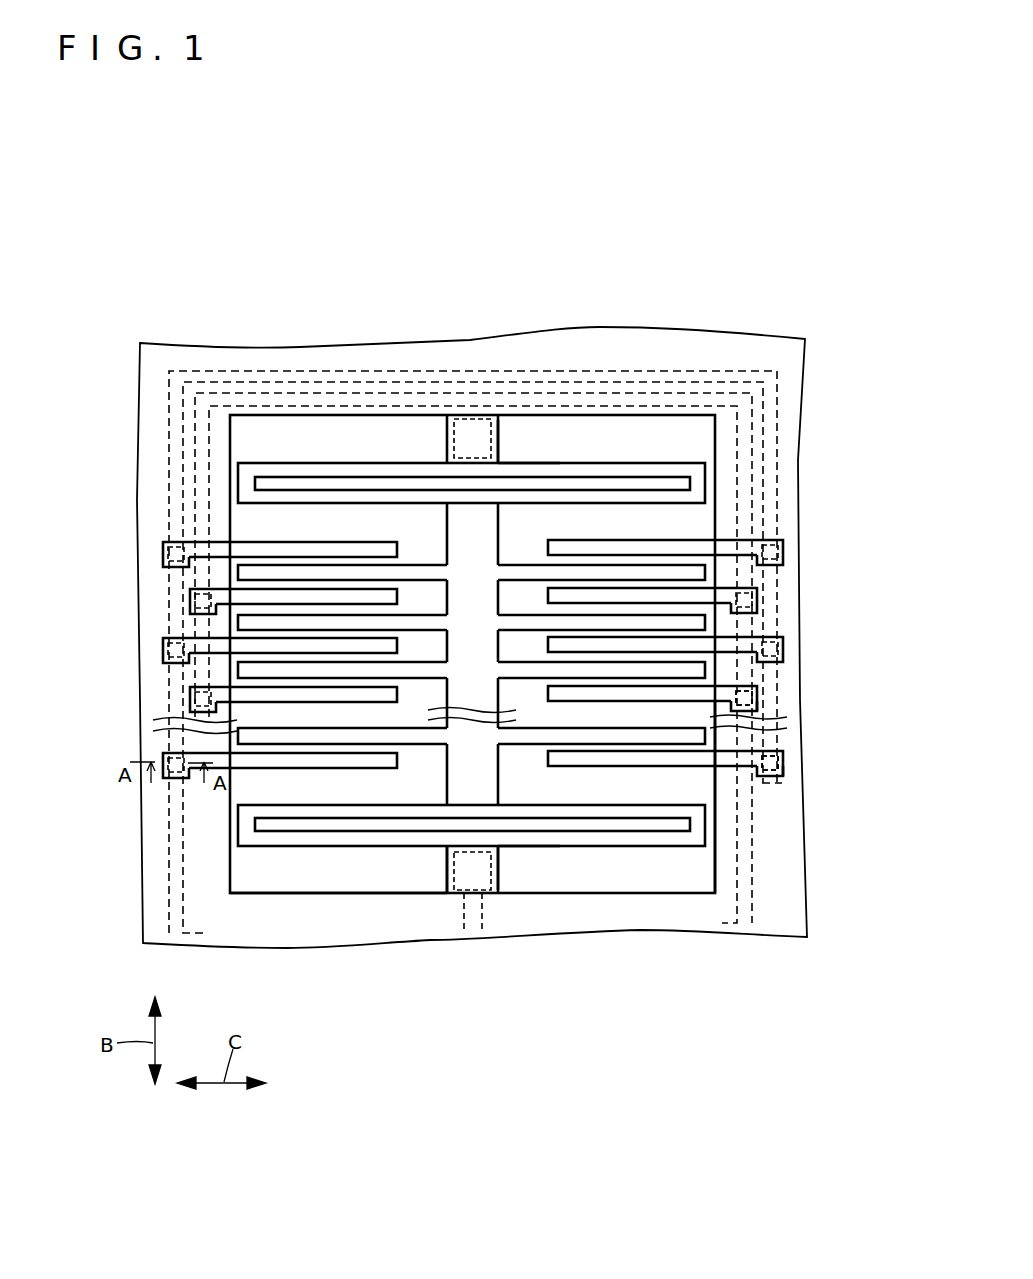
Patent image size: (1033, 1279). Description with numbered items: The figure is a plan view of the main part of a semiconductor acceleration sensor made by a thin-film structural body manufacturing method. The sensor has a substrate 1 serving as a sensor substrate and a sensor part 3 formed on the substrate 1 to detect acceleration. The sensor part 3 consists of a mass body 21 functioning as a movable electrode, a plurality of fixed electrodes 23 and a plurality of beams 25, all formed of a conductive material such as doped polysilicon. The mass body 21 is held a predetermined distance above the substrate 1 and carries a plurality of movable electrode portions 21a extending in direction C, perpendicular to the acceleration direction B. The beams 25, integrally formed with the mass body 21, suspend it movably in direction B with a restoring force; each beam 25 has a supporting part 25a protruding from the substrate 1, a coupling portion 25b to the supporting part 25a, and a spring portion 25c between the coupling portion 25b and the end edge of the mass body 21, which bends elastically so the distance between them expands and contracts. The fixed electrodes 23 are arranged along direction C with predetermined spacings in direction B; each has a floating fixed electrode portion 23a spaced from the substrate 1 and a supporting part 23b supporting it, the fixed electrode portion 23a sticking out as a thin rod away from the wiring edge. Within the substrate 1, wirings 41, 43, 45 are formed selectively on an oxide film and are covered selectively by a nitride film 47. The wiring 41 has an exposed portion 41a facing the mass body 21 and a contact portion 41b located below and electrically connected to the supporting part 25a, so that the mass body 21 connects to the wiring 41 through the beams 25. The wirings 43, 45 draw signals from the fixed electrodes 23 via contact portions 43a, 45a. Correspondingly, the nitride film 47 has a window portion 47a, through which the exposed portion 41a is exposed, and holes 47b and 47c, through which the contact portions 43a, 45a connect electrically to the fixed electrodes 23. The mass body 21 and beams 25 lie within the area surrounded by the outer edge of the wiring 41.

The substrate 1 is at (316, 332).
The sensor part 3 is at (630, 429).
The mass body 21 is at (460, 523).
The movable electrode portions 21a is at (238, 572).
The fixed electrodes 23 is at (227, 542).
The fixed electrode portion 23a is at (297, 542).
The supporting part 23b is at (160, 553).
The beams 25 is at (190, 600).
The supporting part 25a is at (473, 407).
The coupling portion 25b is at (499, 433).
The spring portion 25c is at (551, 462).
The wiring 41 is at (464, 928).
The exposed portion 41a is at (283, 876).
The contact portion 41b is at (447, 871).
The wiring 43 is at (210, 947).
The contact portion 43a is at (785, 754).
The wiring 45 is at (738, 918).
The contact portion 45a is at (765, 688).
The nitride film 47 is at (288, 937).
The window portion 47a is at (715, 858).
The hole 47b is at (790, 773).
The hole 47c is at (760, 703).